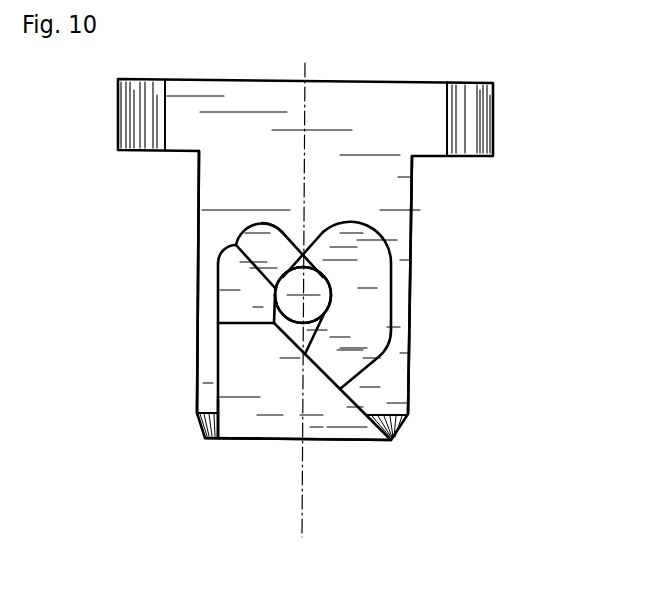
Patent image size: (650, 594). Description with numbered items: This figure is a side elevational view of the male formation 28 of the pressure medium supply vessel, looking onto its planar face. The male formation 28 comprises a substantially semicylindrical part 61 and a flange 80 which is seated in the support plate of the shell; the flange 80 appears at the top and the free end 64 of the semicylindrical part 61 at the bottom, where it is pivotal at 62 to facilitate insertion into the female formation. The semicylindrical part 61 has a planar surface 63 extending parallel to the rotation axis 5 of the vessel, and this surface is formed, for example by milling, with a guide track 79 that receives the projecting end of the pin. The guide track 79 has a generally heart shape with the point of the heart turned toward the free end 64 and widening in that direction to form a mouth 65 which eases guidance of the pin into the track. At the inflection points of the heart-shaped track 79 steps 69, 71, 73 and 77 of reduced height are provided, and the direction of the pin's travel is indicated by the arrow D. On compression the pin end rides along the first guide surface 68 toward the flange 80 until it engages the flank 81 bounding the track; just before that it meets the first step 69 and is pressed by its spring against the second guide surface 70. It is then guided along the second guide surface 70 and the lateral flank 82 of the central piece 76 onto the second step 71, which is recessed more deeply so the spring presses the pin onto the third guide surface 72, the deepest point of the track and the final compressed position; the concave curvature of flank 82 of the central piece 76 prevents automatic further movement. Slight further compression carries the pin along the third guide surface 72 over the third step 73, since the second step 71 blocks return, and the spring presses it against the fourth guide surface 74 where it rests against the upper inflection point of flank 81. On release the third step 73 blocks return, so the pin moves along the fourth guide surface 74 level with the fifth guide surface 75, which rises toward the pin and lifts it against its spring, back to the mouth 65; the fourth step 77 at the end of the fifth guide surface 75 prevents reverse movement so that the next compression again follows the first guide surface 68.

The male formation 28 is at (460, 232).
The flange 80 is at (480, 113).
The semicylindrical part 61 is at (215, 167).
The planar surface 63 is at (398, 300).
The first guide surface 68 is at (236, 289).
The flank 81 is at (235, 238).
The first step 69 is at (237, 264).
The second guide surface 70 is at (267, 247).
The second step 71 is at (289, 263).
The third guide surface 72 is at (310, 280).
The lateral flank 82 is at (298, 303).
The third step 73 is at (333, 262).
The fourth guide surface 74 is at (358, 250).
The fifth guide surface 75 is at (347, 363).
The central piece 76 is at (290, 327).
The guide track 79 is at (237, 334).
The fourth step 77 is at (320, 376).
The free end 64 is at (325, 440).
The mouth 65 is at (235, 415).
The pivot 62 is at (200, 421).
The rotation axis 5 is at (298, 527).
The direction arrow D is at (383, 455).